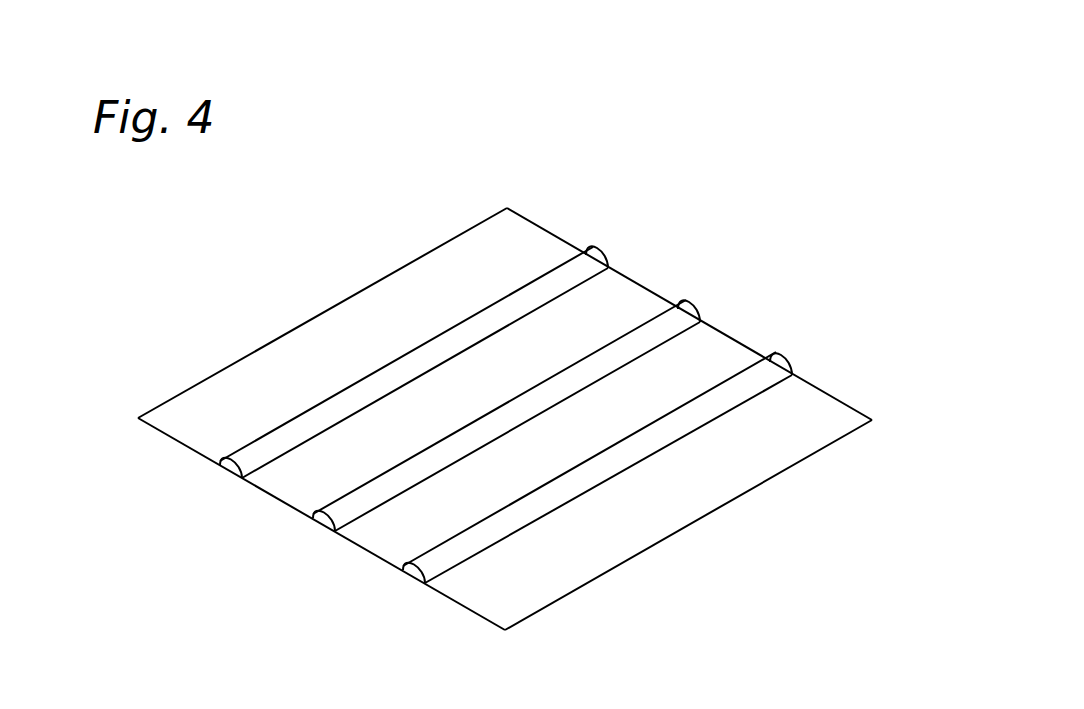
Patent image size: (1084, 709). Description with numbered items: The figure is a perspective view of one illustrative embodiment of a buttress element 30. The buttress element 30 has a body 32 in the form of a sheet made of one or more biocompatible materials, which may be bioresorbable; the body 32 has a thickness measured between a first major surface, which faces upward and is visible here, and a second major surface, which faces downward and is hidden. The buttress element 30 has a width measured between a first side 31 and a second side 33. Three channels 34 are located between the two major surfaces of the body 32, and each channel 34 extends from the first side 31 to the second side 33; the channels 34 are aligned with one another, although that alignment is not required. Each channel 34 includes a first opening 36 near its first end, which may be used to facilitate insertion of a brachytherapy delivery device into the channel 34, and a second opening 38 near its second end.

The buttress element 30 is at (298, 263).
The first side 31 is at (373, 560).
The body 32 is at (468, 260).
The second side 33 is at (740, 337).
The channels 34 is at (266, 448).
The first opening 36 is at (228, 472).
The second opening 38 is at (607, 250).